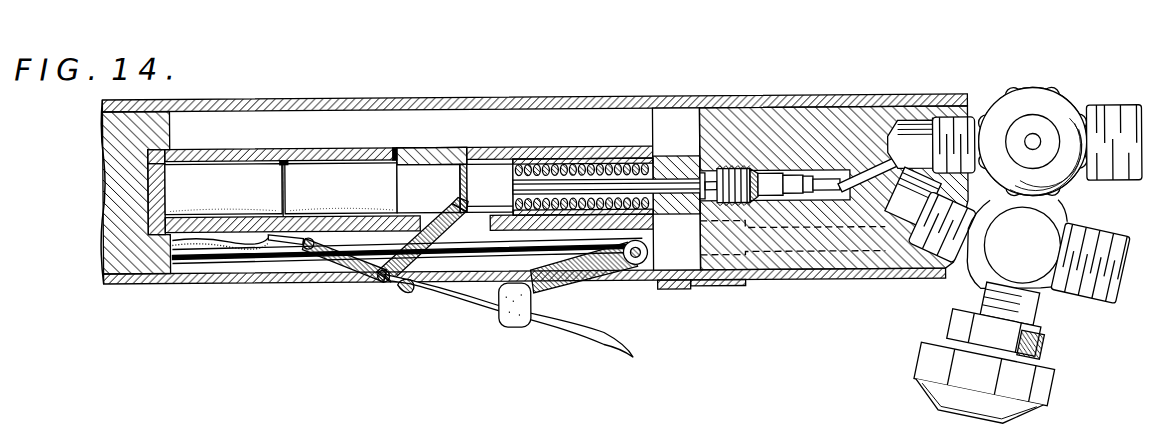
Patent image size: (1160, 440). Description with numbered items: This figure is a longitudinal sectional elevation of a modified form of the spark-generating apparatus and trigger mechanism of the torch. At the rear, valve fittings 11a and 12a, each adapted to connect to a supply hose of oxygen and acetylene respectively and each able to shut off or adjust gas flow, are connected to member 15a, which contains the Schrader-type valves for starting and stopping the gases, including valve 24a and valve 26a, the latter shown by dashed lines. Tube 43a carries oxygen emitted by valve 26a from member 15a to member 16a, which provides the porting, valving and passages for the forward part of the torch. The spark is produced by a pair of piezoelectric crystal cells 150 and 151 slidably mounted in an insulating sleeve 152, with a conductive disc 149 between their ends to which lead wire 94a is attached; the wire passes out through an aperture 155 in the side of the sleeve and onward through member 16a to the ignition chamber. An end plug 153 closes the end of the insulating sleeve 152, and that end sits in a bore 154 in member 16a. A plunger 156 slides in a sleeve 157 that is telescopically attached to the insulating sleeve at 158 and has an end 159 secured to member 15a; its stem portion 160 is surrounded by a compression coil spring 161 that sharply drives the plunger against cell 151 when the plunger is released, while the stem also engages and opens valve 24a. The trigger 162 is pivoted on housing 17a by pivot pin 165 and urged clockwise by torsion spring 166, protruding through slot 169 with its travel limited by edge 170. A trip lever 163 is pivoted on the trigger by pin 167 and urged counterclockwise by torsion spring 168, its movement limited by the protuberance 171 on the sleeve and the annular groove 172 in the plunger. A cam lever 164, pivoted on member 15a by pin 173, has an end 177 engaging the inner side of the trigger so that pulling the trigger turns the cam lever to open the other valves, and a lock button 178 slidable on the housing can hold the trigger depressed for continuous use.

The valve fitting 11a is at (1078, 302).
The valve fitting 12a is at (1103, 118).
The member 15a is at (738, 112).
The member 16a is at (110, 260).
The housing 17a is at (236, 100).
The Schrader valve 24a is at (762, 183).
The Schrader valve 26a is at (820, 262).
The tube 43a is at (190, 259).
The lead wire 94a is at (251, 246).
The disc 149 is at (284, 164).
The piezoelectric crystal cell 150 is at (223, 189).
The piezoelectric crystal cell 151 is at (341, 188).
The insulating sleeve 152 is at (190, 150).
The end plug 153 is at (150, 207).
The bore 154 is at (148, 158).
The aperture 155 is at (284, 232).
The plunger 156 is at (493, 182).
The sleeve 157 is at (437, 150).
The telescopic attachment 158 is at (395, 150).
The end of sleeve 159 is at (663, 160).
The stem portion 160 is at (612, 188).
The compression coil spring 161 is at (564, 168).
The trigger 162 is at (488, 326).
The trip lever 163 is at (440, 278).
The cam lever 164 is at (606, 284).
The pivot pin 165 is at (325, 250).
The torsion spring 166 is at (318, 252).
The pin 167 is at (386, 285).
The torsion spring 168 is at (411, 295).
The slot 169 is at (622, 275).
The edge of slot 170 is at (362, 283).
The protuberance 171 is at (427, 240).
The annular groove 172 is at (463, 167).
The pin 173 is at (672, 294).
The end of cam lever 177 is at (537, 331).
The lock button 178 is at (718, 291).